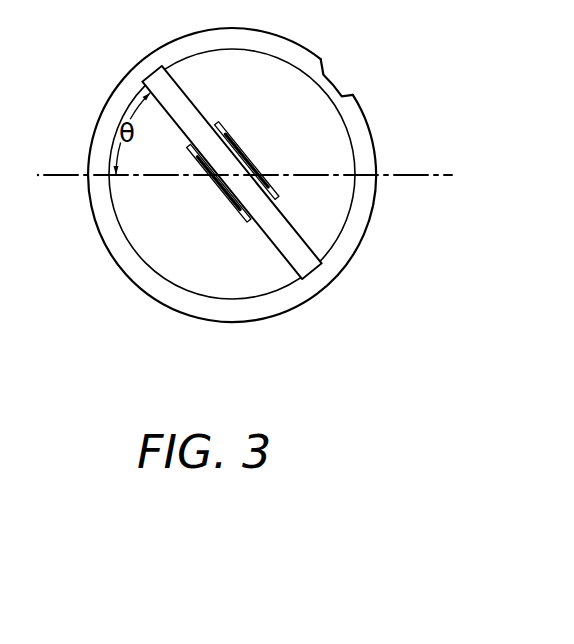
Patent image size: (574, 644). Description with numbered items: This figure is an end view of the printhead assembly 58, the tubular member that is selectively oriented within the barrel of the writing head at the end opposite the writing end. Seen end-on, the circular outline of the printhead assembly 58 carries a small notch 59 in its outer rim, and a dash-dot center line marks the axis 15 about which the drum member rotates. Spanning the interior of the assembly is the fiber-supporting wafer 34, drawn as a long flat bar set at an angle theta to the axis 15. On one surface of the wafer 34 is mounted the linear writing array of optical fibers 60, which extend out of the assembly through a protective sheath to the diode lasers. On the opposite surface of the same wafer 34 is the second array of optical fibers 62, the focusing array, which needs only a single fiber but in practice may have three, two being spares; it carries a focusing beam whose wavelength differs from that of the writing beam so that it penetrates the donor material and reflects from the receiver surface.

The axis 15 is at (416, 178).
The fiber-supporting wafer 34 is at (270, 236).
The printhead assembly 58 is at (360, 146).
The alignment notch 59 is at (342, 99).
The optical fibers 60 is at (237, 147).
The second array of optical fibers 62 is at (218, 181).